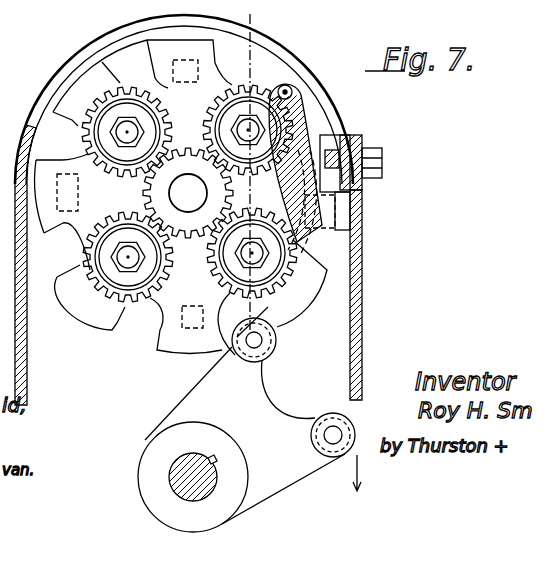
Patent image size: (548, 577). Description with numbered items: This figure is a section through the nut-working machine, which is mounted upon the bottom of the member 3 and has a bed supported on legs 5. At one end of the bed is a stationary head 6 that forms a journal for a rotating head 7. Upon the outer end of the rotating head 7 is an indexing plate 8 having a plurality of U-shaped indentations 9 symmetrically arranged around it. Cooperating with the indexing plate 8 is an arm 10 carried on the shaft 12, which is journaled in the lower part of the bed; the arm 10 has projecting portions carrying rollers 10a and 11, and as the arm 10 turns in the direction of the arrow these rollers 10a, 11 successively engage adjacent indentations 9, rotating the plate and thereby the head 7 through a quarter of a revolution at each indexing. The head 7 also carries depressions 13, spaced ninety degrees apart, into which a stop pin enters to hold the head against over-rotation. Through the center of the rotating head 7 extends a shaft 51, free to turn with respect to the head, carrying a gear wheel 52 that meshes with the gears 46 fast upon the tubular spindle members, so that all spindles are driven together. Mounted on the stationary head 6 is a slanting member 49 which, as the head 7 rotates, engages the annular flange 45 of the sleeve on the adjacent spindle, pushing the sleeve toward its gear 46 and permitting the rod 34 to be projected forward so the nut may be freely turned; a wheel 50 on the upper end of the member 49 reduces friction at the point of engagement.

The member 3 is at (252, 165).
The legs 5 is at (266, 360).
The stationary head 6 is at (337, 117).
The rotating head 7 is at (160, 330).
The indexing plate 8 is at (80, 313).
The U-shaped indentations 9 is at (60, 232).
The arm 10 is at (241, 439).
The roller 10a is at (347, 415).
The roller 11 is at (276, 340).
The shaft 12 is at (170, 475).
The depressions 13 is at (193, 307).
The rod 34 is at (243, 127).
The annular flange 45 is at (292, 97).
The gear 46 is at (120, 213).
The member 49 is at (328, 210).
The wheel 50 is at (290, 84).
The shaft 51 is at (188, 193).
The gear wheel 52 is at (188, 193).